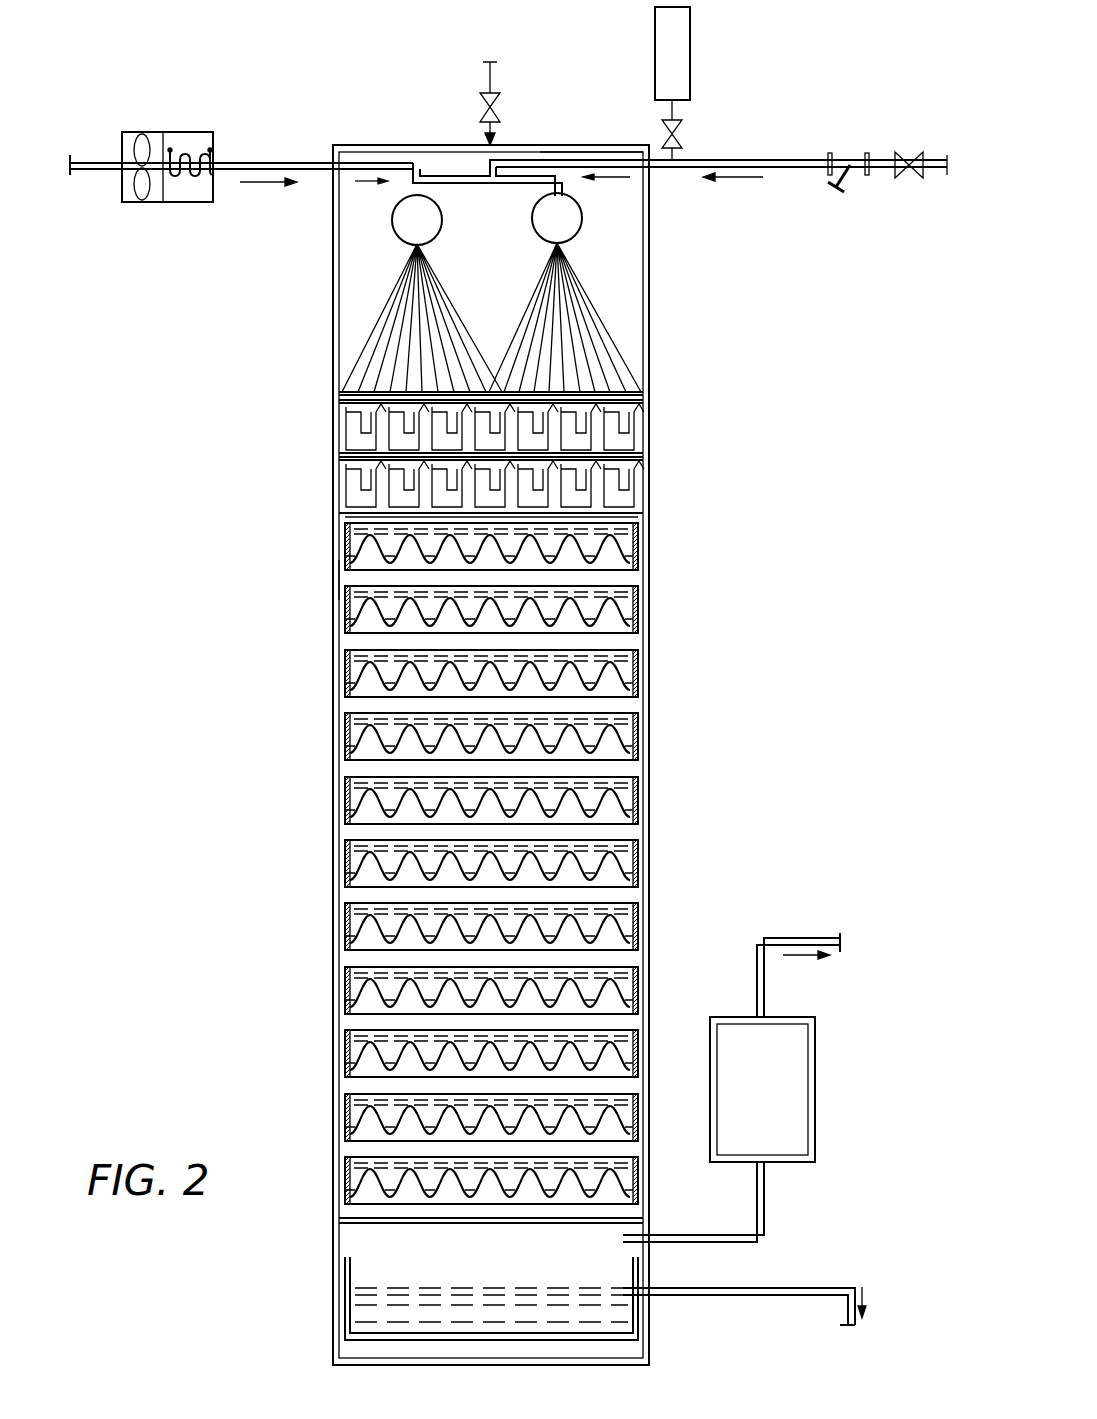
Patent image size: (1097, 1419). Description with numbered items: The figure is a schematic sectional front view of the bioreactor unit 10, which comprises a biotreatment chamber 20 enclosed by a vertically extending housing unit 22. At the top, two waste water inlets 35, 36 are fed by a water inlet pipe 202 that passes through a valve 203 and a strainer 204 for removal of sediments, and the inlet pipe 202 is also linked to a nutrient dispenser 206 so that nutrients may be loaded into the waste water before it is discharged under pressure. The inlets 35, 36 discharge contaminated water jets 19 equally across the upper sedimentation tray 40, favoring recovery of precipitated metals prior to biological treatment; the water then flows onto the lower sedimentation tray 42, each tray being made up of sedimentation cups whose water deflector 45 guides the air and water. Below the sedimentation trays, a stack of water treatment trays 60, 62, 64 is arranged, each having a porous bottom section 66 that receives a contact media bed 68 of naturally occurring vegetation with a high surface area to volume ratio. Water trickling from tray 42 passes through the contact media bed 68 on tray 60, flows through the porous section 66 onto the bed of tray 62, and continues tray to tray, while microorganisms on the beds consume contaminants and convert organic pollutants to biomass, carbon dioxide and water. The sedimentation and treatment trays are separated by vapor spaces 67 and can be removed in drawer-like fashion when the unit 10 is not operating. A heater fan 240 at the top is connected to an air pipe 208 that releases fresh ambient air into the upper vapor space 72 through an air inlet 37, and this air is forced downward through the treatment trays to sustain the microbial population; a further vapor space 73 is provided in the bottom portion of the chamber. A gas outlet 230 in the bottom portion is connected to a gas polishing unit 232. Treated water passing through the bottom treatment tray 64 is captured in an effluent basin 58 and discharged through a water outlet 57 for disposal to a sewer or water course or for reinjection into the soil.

The bioreactor unit 10 is at (327, 112).
The contaminated water jets 19 is at (578, 342).
The biotreatment chamber 20 is at (412, 145).
The housing unit 22 is at (545, 145).
The waste water inlet 35 is at (567, 220).
The waste water inlet 36 is at (408, 220).
The air inlet 37 is at (367, 163).
The sedimentation tray 40 is at (650, 455).
The sedimentation tray 42 is at (632, 517).
The water deflector 45 is at (625, 432).
The water outlet 57 is at (632, 1300).
The effluent basin 58 is at (523, 1300).
The water treatment tray 60 is at (645, 569).
The water treatment tray 62 is at (640, 625).
The water treatment tray 64 is at (640, 1200).
The porous bottom section 66 is at (600, 548).
The vapor space 67 is at (365, 578).
The contact media bed 68 is at (637, 531).
The vapor space 72 is at (473, 276).
The vapor space 73 is at (426, 1262).
The water inlet pipe 202 is at (783, 170).
The valve 203 is at (910, 177).
The strainer 204 is at (853, 163).
The nutrient dispenser 206 is at (673, 40).
The air pipe 208 is at (248, 160).
The gas outlet 230 is at (735, 1243).
The gas polishing unit 232 is at (788, 1047).
The heater fan 240 is at (170, 132).